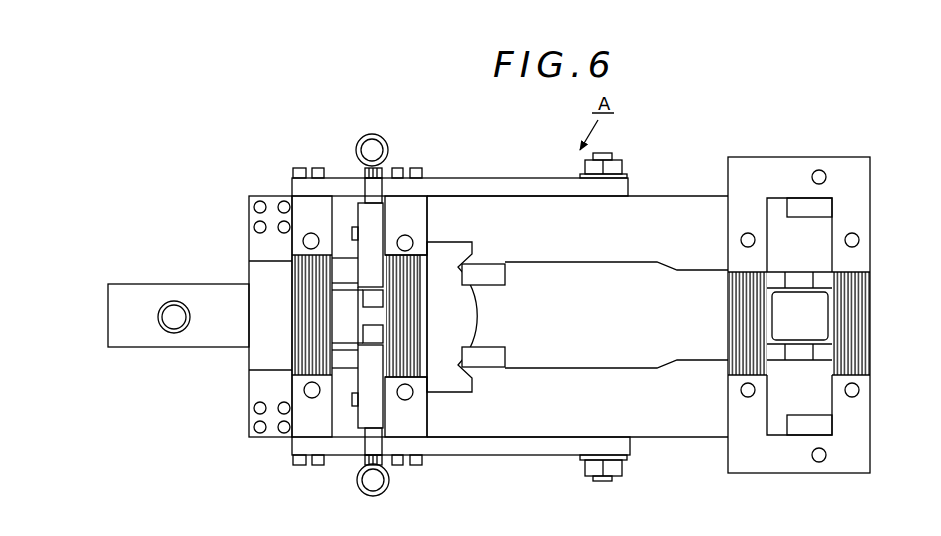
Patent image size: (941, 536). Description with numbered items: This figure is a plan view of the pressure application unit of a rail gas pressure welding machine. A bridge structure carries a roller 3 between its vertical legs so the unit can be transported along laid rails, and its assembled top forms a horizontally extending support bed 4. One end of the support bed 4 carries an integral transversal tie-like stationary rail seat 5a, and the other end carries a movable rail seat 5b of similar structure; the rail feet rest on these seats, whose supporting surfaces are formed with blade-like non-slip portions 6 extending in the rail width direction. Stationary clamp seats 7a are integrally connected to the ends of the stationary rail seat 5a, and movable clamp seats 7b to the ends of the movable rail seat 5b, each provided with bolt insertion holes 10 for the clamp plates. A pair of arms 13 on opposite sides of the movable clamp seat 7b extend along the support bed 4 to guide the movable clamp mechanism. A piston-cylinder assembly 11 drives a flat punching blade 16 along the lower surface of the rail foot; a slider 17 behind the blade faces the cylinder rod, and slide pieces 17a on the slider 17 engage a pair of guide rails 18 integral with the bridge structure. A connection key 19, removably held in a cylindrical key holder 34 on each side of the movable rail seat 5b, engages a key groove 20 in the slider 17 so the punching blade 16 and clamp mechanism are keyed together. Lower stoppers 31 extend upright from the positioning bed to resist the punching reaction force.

The roller 3 is at (812, 305).
The support bed 4 is at (650, 205).
The stationary rail seat 5a is at (870, 310).
The movable rail seat 5b is at (300, 328).
The blade-like portions 6 is at (290, 287).
The stationary clamp seats 7a is at (798, 170).
The movable clamp seats 7b is at (422, 224).
The bolt insertion holes 10 is at (310, 233).
The piston-cylinder assembly 11 is at (154, 342).
The arms 13 is at (522, 186).
The punching blade 16 is at (465, 313).
The slider 17 is at (292, 372).
The slide pieces 17a is at (313, 255).
The guide rails 18 is at (500, 281).
The connection key 19 is at (372, 190).
The key groove 20 is at (373, 300).
The lower stoppers 31 is at (827, 208).
The key holder 34 is at (365, 222).